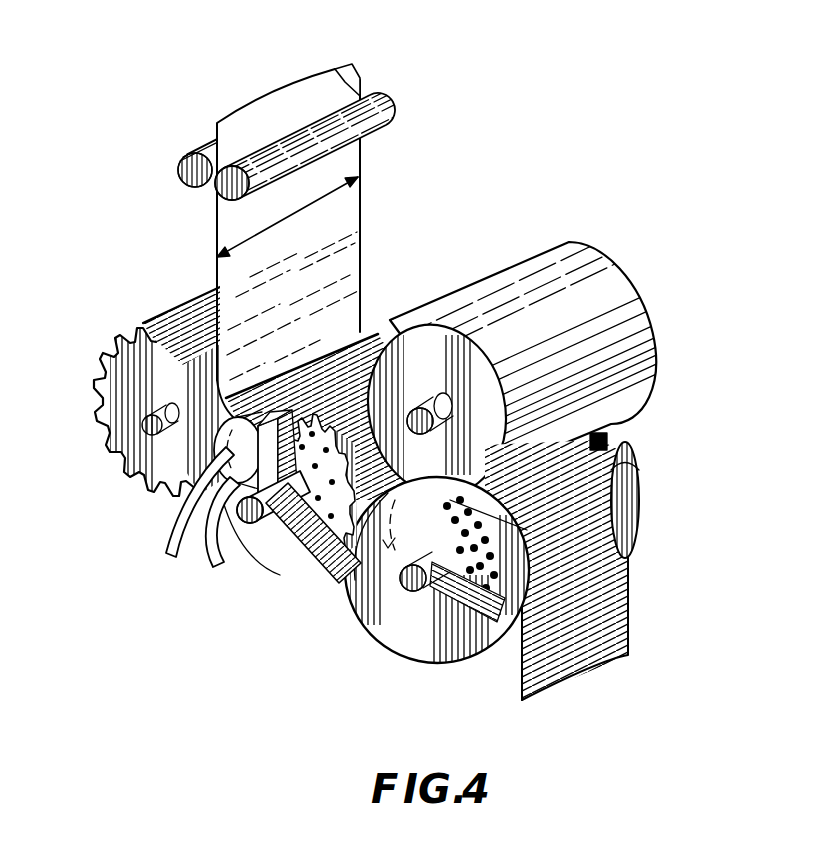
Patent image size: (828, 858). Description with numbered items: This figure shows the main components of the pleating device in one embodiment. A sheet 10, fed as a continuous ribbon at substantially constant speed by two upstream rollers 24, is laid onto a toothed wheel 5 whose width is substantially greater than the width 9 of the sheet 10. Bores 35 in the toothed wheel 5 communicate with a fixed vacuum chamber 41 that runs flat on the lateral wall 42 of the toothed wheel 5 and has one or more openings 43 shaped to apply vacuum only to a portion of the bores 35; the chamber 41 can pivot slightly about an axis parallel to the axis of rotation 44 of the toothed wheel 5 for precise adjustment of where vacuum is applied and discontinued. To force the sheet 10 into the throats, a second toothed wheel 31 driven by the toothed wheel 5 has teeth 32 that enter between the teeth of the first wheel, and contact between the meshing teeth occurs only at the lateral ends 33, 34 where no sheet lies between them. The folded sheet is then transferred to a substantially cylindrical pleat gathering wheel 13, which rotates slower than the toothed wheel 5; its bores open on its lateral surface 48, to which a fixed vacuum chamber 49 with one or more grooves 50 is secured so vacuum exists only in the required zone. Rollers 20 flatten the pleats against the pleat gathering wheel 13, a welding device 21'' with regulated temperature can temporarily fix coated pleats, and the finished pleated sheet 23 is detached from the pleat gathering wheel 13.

The toothed wheel 5 is at (366, 330).
The width of the sheet 9 is at (343, 205).
The sheet 10 is at (350, 85).
The pleat gathering wheel 13 is at (512, 665).
The rollers 20 is at (590, 287).
The pleated sheet 23 is at (632, 618).
The rollers 24 is at (190, 157).
The second toothed wheel 31 is at (100, 393).
The teeth 32 is at (210, 285).
The lateral end 33 is at (392, 635).
The lateral end 34 is at (142, 327).
The bores 35 is at (358, 605).
The fixed vacuum chamber 41 is at (250, 547).
The lateral wall 42 is at (317, 587).
The openings 43 is at (347, 633).
The axis of rotation 44 is at (290, 587).
The lateral surface 48 is at (495, 640).
The fixed vacuum chamber 49 is at (448, 667).
The grooves 50 is at (428, 663).